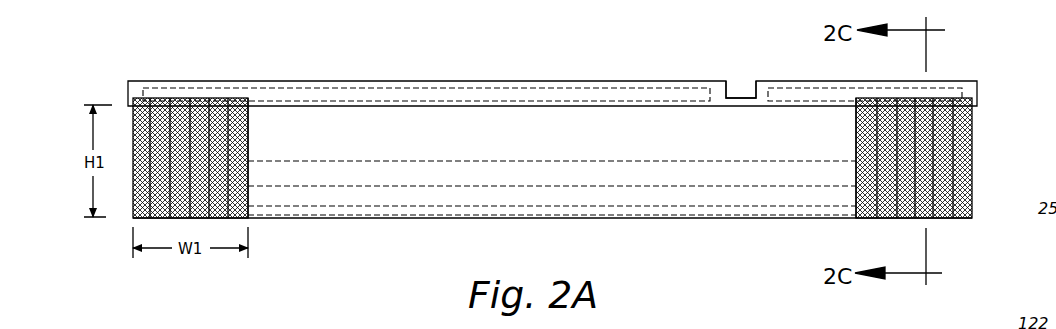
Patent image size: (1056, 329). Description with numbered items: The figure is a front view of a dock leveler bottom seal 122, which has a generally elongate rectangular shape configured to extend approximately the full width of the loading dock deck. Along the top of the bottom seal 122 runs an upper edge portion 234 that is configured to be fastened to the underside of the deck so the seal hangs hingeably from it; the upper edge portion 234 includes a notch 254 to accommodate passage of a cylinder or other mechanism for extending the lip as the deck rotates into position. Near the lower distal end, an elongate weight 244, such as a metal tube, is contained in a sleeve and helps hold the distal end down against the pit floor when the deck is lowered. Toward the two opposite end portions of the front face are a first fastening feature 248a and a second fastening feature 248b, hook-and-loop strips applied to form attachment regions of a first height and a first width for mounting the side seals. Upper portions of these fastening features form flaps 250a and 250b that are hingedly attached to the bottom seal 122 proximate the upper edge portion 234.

The bottom seal 122 is at (566, 170).
The upper edge portion 234 is at (622, 82).
The notch 254 is at (728, 95).
The elongate weight 244 is at (385, 210).
The flap 250a is at (165, 100).
The flap 250b is at (940, 100).
The first fastening feature 248a is at (248, 172).
The second fastening feature 248b is at (856, 173).